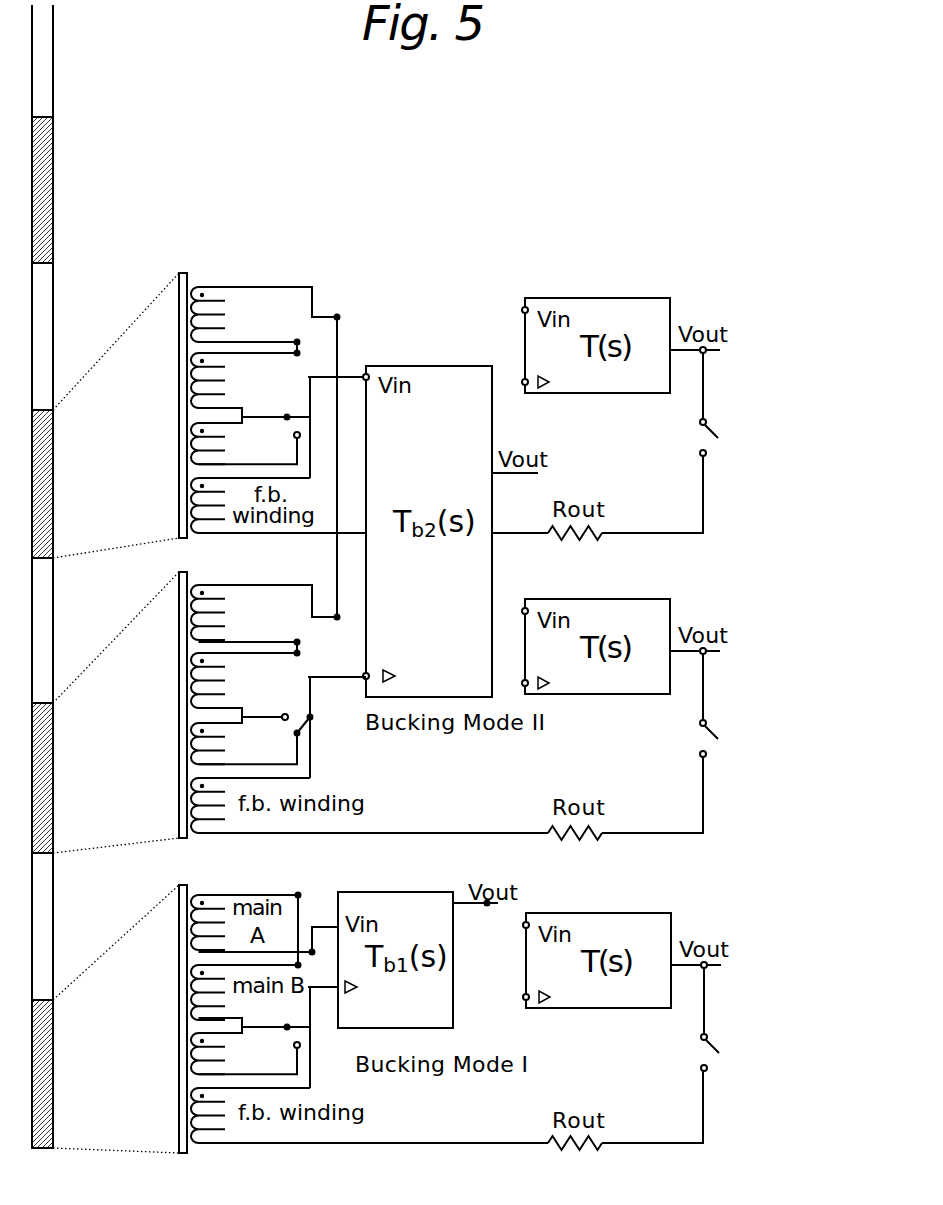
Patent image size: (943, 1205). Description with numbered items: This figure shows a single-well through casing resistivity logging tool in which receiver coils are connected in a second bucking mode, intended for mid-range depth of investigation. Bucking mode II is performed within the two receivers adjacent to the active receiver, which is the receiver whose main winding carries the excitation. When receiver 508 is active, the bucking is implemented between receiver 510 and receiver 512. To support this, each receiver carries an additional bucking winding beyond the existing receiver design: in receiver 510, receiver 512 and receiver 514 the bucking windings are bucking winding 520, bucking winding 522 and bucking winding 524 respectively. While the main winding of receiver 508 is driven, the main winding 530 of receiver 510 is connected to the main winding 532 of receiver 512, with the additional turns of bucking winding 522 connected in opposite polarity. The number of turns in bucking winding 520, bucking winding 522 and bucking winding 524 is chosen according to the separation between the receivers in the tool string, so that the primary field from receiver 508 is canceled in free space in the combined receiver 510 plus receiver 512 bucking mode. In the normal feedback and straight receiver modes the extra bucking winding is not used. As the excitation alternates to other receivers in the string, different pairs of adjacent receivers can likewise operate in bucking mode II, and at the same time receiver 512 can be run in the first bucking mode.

The receiver 508 is at (45, 180).
The receiver 510 is at (161, 465).
The receiver 512 is at (156, 744).
The receiver 514 is at (156, 1054).
The bucking winding 520 is at (191, 438).
The bucking winding 522 is at (192, 740).
The bucking winding 524 is at (192, 1050).
The main winding 530 is at (173, 290).
The main winding 532 is at (173, 590).